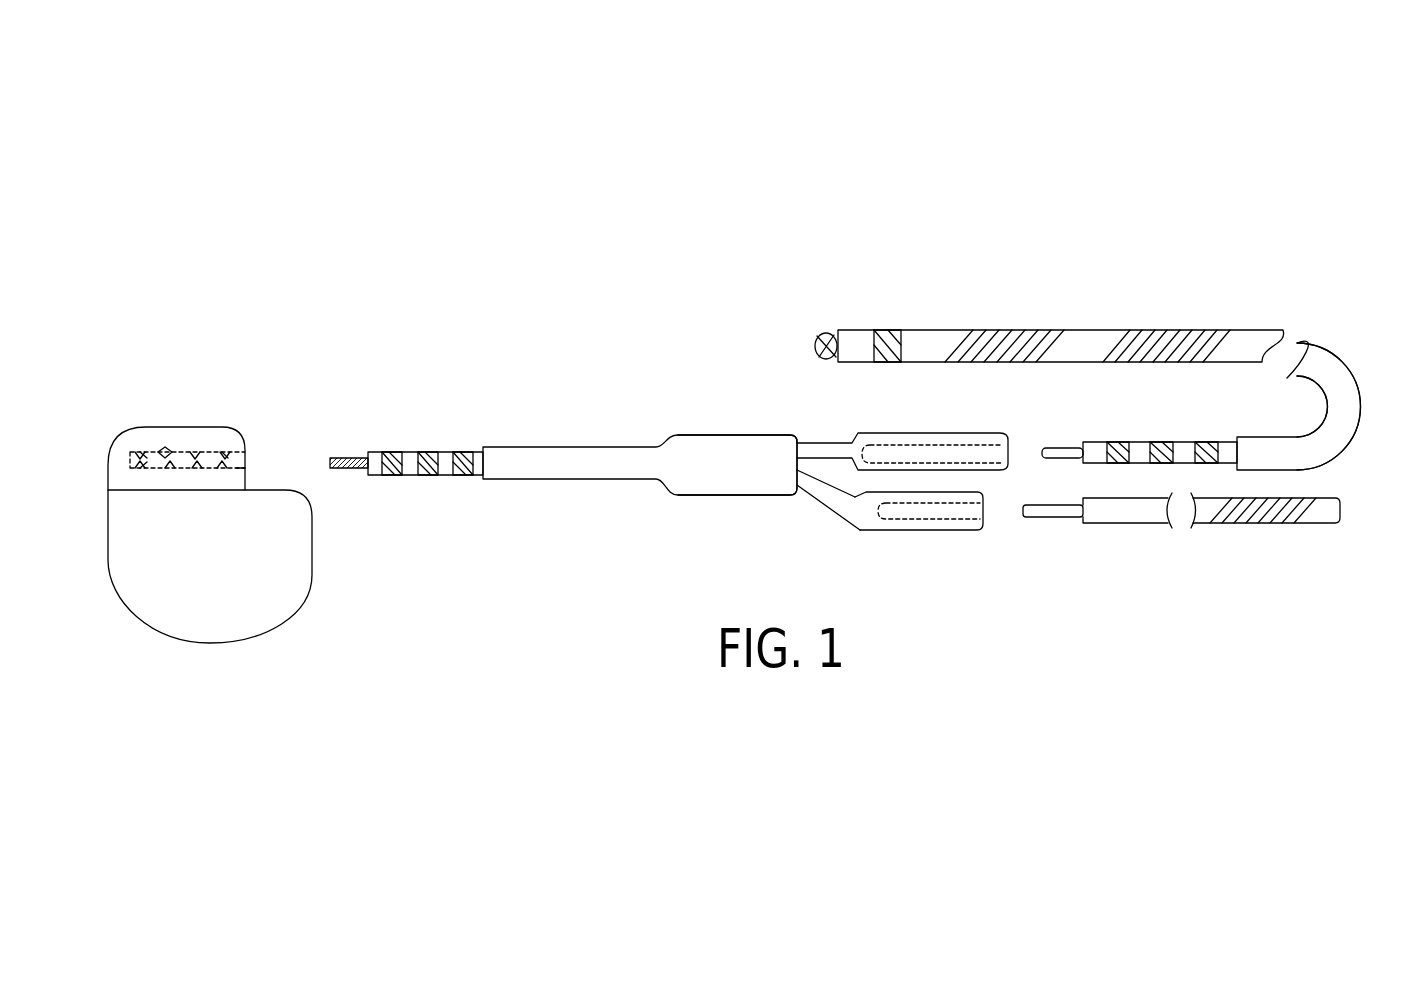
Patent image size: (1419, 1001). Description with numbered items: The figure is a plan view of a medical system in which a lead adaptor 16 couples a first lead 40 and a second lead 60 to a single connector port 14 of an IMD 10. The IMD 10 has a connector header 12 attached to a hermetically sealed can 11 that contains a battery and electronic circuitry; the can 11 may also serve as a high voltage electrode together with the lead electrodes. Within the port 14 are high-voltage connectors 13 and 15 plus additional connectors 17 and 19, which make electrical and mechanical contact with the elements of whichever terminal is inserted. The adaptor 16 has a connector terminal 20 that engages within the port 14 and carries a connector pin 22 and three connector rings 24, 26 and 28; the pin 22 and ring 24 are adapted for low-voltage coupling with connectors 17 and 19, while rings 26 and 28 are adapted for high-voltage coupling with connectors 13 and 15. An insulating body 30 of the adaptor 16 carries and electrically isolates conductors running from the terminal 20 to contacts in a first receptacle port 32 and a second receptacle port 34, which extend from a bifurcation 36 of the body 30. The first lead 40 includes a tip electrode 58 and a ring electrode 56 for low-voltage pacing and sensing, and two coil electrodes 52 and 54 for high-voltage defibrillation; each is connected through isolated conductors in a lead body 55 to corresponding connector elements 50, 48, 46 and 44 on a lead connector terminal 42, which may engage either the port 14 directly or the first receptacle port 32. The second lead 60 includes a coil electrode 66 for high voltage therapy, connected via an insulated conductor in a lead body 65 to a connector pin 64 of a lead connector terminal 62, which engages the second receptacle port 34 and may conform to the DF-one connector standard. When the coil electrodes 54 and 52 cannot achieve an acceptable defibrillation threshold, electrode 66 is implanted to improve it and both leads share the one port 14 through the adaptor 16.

The IMD 10 is at (193, 352).
The can 11 is at (170, 610).
The connector header 12 is at (145, 423).
The high-voltage connector 13 is at (198, 445).
The connector port 14 is at (243, 470).
The high-voltage connector 15 is at (225, 445).
The lead adaptor 16 is at (605, 552).
The connector 17 is at (147, 468).
The connector 19 is at (147, 455).
The connector terminal 20 is at (443, 418).
The connector pin 22 is at (333, 470).
The connector ring 24 is at (382, 476).
The connector ring 26 is at (420, 476).
The connector ring 28 is at (458, 476).
The insulating body 30 is at (622, 445).
The first receptacle port 32 is at (898, 432).
The second receptacle port 34 is at (893, 528).
The bifurcation 36 is at (803, 497).
The first lead 40 is at (1290, 310).
The lead connector terminal 42 is at (1172, 395).
The connector element 44 is at (1075, 443).
The connector element 46 is at (1113, 442).
The connector element 48 is at (1157, 442).
The connector element 50 is at (1207, 442).
The coil electrode 52 is at (1152, 330).
The coil electrode 54 is at (1007, 330).
The lead body 55 is at (1357, 423).
The ring electrode 56 is at (883, 330).
The tip electrode 58 is at (822, 338).
The second lead 60 is at (1213, 605).
The lead connector terminal 62 is at (1072, 578).
The connector pin 64 is at (1038, 517).
The lead body 65 is at (1195, 527).
The coil electrode 66 is at (1277, 525).